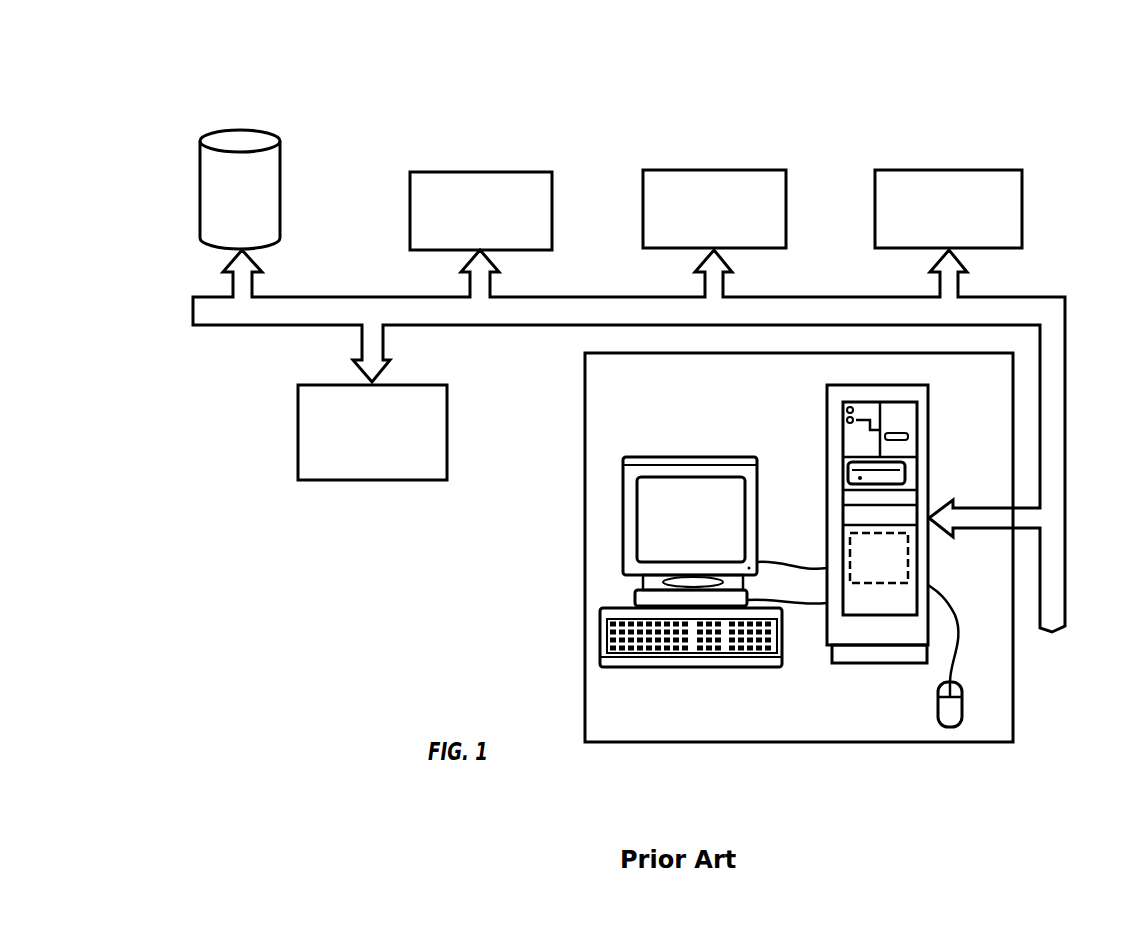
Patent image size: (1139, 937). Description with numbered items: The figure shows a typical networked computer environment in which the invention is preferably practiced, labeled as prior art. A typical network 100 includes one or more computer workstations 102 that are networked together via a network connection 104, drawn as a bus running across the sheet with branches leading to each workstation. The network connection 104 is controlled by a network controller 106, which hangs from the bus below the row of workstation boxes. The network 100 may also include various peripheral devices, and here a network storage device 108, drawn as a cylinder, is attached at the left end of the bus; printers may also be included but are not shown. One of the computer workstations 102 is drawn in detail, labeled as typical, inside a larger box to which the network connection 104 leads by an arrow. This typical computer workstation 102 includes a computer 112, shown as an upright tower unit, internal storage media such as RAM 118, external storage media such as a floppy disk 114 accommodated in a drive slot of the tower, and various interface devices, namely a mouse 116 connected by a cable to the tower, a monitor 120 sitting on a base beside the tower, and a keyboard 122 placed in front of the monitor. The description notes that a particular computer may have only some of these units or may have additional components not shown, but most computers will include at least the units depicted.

The network 100 is at (268, 77).
The computer workstation 102 is at (511, 245).
The network connection 104 is at (1065, 495).
The network controller 106 is at (354, 476).
The network storage device 108 is at (282, 158).
The computer 112 is at (930, 580).
The floppy disk 114 is at (898, 460).
The mouse 116 is at (940, 705).
The RAM 118 is at (760, 545).
The monitor 120 is at (717, 455).
The keyboard 122 is at (690, 667).